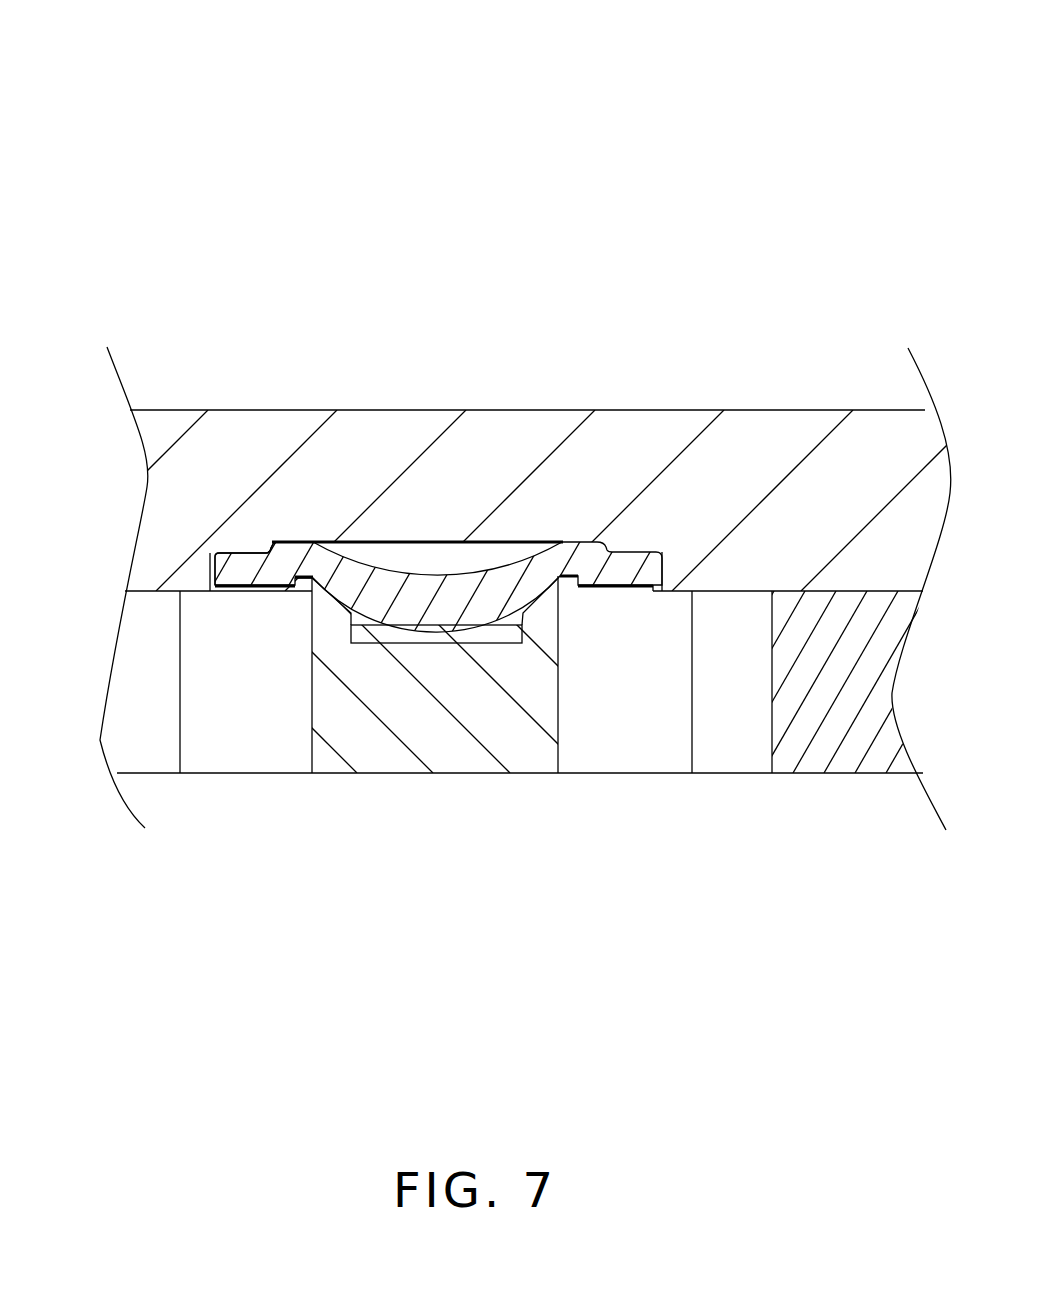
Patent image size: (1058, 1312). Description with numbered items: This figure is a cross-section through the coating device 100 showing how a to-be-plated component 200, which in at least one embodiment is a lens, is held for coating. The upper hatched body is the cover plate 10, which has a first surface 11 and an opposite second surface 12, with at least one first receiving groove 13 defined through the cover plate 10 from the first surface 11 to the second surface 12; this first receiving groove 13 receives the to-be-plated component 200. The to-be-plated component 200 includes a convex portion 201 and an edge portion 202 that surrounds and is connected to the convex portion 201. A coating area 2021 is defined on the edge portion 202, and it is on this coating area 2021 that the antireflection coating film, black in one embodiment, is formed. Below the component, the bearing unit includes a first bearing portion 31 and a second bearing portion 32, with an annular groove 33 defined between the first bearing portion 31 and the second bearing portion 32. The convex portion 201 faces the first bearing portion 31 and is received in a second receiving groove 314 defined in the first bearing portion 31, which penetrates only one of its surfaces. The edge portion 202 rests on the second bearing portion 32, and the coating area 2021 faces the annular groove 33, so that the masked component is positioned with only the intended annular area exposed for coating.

The coating device 100 is at (580, 52).
The cover plate 10 is at (741, 460).
The first surface 11 is at (803, 584).
The second surface 12 is at (876, 402).
The first receiving groove 13 is at (660, 545).
The to-be-plated component 200 is at (440, 428).
The convex portion 201 is at (450, 597).
The edge portion 202 is at (261, 446).
The coating area 2021 is at (313, 540).
The first bearing portion 31 is at (547, 622).
The second receiving groove 314 is at (345, 614).
The second bearing portion 32 is at (840, 736).
The annular groove 33 is at (267, 743).